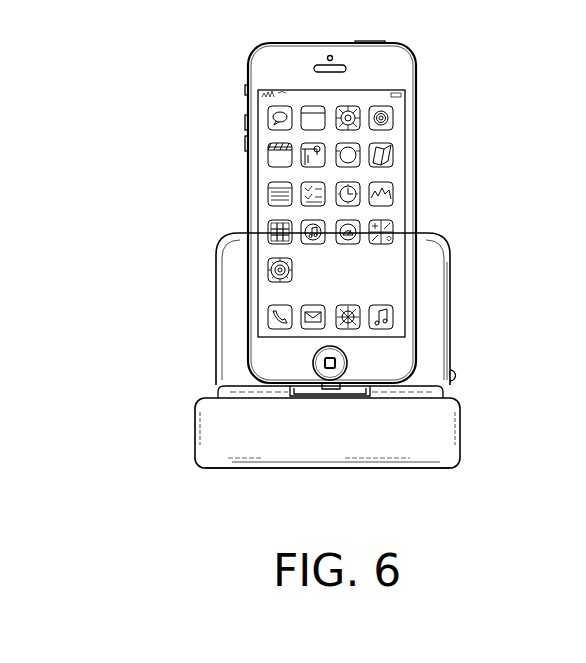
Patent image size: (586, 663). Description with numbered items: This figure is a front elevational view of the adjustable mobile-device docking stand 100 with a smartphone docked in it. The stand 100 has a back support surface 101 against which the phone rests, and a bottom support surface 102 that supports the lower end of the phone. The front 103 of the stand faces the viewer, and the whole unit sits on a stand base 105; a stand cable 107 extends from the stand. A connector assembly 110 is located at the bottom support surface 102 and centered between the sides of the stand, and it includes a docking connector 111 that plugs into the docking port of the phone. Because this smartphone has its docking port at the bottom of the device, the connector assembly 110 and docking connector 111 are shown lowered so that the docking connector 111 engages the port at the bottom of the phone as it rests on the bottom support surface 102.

The adjustable mobile-device docking stand 100 is at (152, 453).
The back support surface 101 is at (440, 272).
The bottom support surface 102 is at (446, 393).
The front 103 is at (403, 452).
The stand base 105 is at (226, 470).
The stand cable 107 is at (456, 375).
The connector assembly 110 is at (300, 397).
The docking connector 111 is at (333, 391).